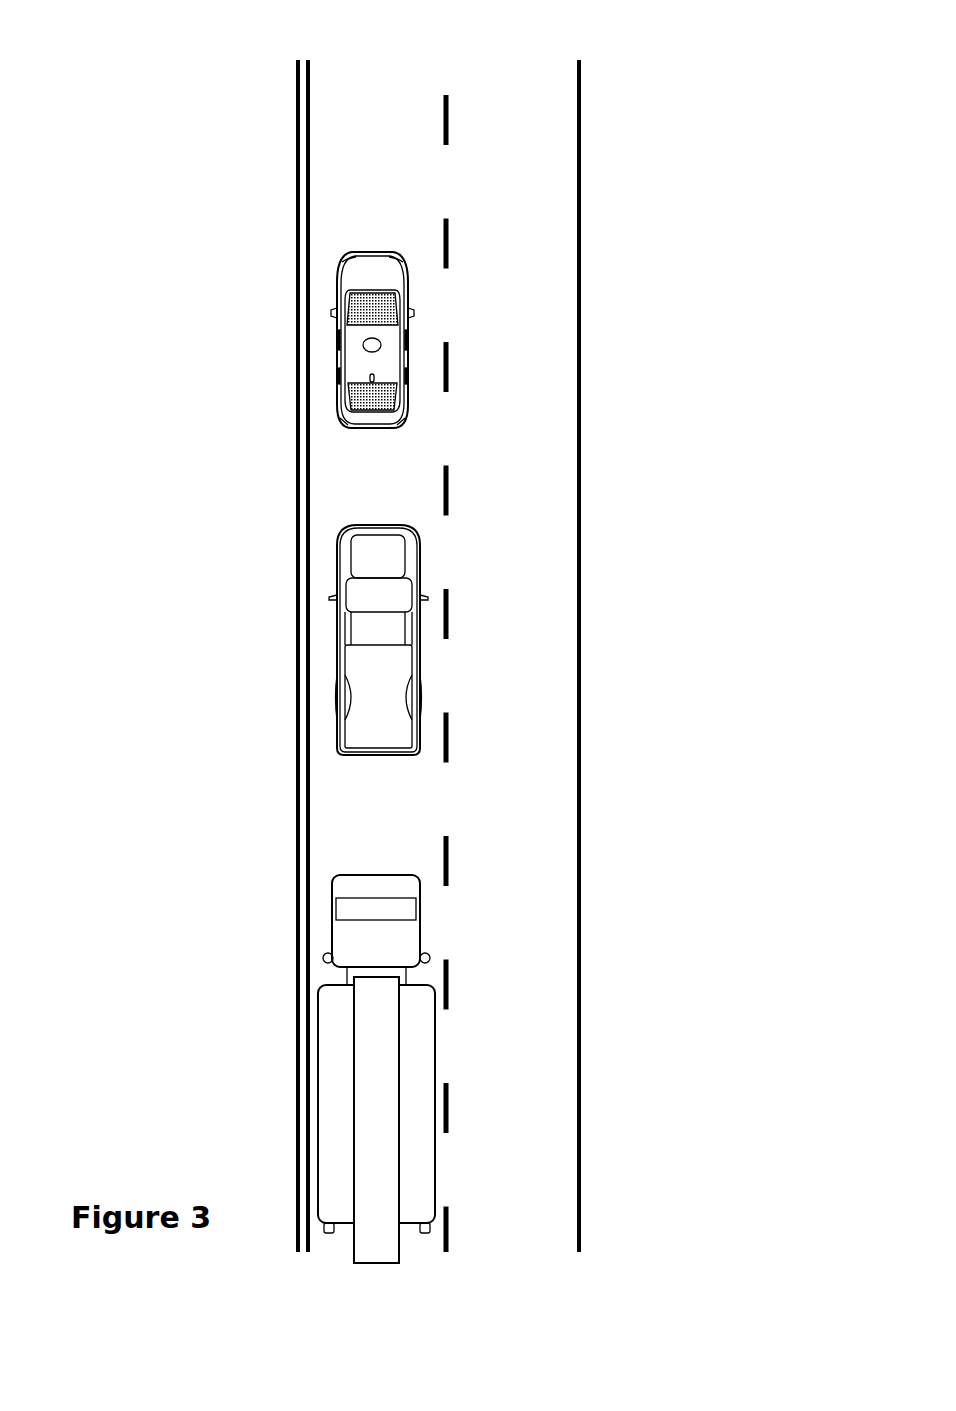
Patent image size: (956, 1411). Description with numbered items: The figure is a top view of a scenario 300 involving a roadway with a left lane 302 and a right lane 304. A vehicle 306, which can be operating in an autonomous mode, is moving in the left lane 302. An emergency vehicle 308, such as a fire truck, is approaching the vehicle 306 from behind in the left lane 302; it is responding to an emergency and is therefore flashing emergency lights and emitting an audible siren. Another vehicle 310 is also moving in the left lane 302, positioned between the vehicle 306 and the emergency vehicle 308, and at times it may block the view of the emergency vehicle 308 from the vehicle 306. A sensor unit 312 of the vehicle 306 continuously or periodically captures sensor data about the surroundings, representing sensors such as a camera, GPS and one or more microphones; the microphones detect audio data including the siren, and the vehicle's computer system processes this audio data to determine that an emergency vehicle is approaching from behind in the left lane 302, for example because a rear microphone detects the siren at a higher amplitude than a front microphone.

The scenario 300 is at (203, 193).
The left lane 302 is at (380, 85).
The right lane 304 is at (513, 85).
The vehicle 306 is at (350, 256).
The emergency vehicle 308 is at (333, 890).
The other vehicle 310 is at (337, 670).
The sensor unit 312 is at (363, 342).